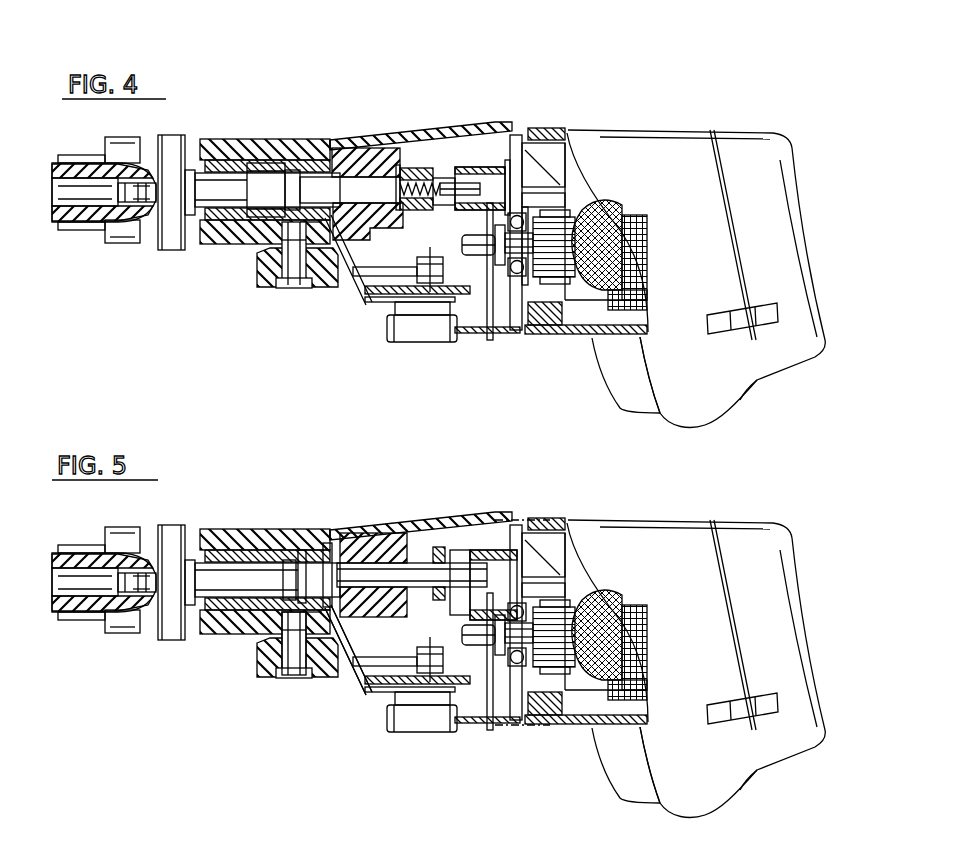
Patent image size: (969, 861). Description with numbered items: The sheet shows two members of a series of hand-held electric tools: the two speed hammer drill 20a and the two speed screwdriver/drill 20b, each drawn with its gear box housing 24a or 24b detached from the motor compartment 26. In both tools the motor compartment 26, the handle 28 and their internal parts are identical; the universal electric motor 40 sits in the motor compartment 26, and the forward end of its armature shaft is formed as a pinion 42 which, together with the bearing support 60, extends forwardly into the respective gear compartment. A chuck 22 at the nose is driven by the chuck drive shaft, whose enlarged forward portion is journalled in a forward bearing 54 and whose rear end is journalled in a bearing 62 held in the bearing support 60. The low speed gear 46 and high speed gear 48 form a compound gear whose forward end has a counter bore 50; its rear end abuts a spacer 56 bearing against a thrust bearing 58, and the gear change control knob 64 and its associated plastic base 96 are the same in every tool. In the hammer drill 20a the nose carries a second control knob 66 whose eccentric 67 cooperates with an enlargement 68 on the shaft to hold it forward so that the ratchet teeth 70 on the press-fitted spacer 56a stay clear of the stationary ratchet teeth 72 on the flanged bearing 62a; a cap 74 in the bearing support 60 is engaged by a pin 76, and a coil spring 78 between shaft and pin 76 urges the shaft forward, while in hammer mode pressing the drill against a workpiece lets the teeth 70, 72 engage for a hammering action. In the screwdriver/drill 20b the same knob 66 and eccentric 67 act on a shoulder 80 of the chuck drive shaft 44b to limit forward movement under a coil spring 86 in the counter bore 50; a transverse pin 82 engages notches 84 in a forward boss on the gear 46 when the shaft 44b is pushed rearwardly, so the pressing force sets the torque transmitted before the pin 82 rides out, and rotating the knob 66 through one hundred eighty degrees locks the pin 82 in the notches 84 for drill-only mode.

In FIG. 4, the two speed hammer drill 20a is at (617, 100).
In FIG. 5, the two speed screwdriver/drill 20b is at (665, 500).
In FIG. 4, the chuck 22 is at (125, 245).
In FIG. 5, the chuck 22 is at (125, 635).
In FIG. 4, the gear box housing 24a is at (295, 140).
In FIG. 5, the gear box housing 24b is at (248, 528).
In FIG. 4, the motor compartment 26 is at (550, 130).
In FIG. 5, the motor compartment 26 is at (555, 522).
In FIG. 4, the handle 28 is at (690, 405).
In FIG. 5, the handle 28 is at (650, 762).
In FIG. 4, the universal electric motor 40 is at (595, 265).
In FIG. 5, the universal electric motor 40 is at (605, 592).
In FIG. 4, the pinion 42 is at (478, 285).
In FIG. 5, the pinion 42 is at (482, 700).
In FIG. 4, the chuck drive shaft 44b is at (515, 334).
In FIG. 4, the low speed gear 46 is at (352, 140).
In FIG. 5, the low speed gear 46 is at (358, 530).
In FIG. 4, the high speed gear 48 is at (385, 145).
In FIG. 5, the high speed gear 48 is at (400, 535).
In FIG. 5, the counter bore 50 is at (330, 660).
In FIG. 4, the forward bearing 54 is at (232, 140).
In FIG. 5, the forward bearing 54 is at (226, 528).
In FIG. 5, the spacer 56 is at (439, 540).
In FIG. 4, the spacer 56a is at (410, 140).
In FIG. 5, the thrust bearing 58 is at (470, 540).
In FIG. 4, the bearing support 60 is at (480, 130).
In FIG. 5, the bearing support 60 is at (510, 522).
In FIG. 5, the bearing 62 is at (496, 730).
In FIG. 4, the bearing 62a is at (491, 340).
In FIG. 4, the gear change control knob 64 is at (405, 342).
In FIG. 5, the gear change control knob 64 is at (415, 732).
In FIG. 4, the second control knob 66 is at (268, 287).
In FIG. 5, the second control knob 66 is at (268, 677).
In FIG. 4, the eccentric 67 is at (312, 145).
In FIG. 5, the eccentric 67 is at (270, 530).
In FIG. 4, the enlargement 68 is at (265, 178).
In FIG. 4, the ratchet teeth 70 is at (423, 215).
In FIG. 4, the stationary ratchet teeth 72 is at (460, 130).
In FIG. 4, the cap 74 is at (515, 130).
In FIG. 4, the pin 76 is at (445, 140).
In FIG. 4, the coil spring 78 is at (430, 140).
In FIG. 5, the shoulder 80 is at (300, 530).
In FIG. 5, the transverse pin 82 is at (327, 530).
In FIG. 5, the notches 84 is at (385, 530).
In FIG. 5, the coil spring 86 is at (378, 625).
In FIG. 4, the plastic base 96 is at (412, 272).
In FIG. 5, the plastic base 96 is at (430, 648).